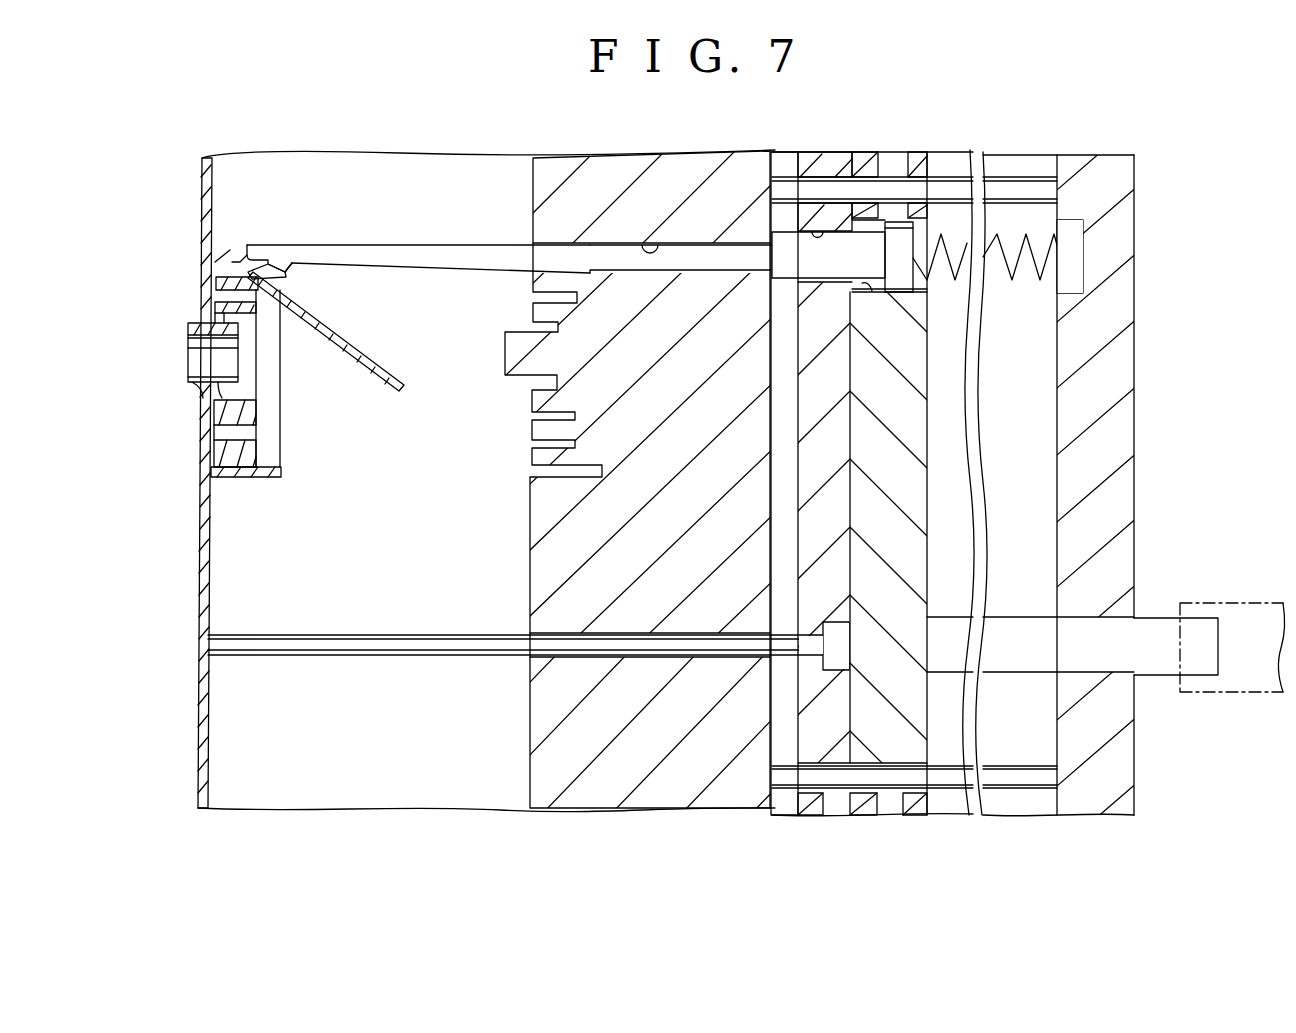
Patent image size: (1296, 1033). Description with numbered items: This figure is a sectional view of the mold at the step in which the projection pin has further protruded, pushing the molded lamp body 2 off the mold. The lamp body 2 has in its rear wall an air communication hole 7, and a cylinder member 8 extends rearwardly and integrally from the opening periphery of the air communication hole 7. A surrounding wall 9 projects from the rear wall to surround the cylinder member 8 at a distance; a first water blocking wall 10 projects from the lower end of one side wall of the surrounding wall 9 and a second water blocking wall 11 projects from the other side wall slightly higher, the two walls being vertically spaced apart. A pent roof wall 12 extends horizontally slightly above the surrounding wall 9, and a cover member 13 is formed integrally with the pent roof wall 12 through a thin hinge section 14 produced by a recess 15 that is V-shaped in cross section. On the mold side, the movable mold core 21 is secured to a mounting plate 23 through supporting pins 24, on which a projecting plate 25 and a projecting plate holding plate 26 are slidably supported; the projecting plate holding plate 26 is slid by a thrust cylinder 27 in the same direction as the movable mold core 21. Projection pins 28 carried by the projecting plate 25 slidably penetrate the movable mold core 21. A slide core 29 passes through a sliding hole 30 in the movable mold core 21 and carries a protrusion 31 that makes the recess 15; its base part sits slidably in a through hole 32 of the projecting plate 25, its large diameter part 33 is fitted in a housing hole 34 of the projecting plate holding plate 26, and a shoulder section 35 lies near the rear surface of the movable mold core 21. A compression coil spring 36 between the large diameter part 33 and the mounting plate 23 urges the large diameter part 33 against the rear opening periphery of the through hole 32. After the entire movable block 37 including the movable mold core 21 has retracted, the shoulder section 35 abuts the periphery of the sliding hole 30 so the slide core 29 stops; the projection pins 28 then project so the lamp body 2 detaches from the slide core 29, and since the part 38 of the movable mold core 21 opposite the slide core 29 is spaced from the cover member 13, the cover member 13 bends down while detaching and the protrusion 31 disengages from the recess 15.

The lamp body 2 is at (212, 604).
The air communication hole 7 is at (188, 350).
The cylinder member 8 is at (230, 390).
The surrounding wall 9 is at (212, 313).
The first water blocking wall 10 is at (213, 470).
The second water blocking wall 11 is at (218, 428).
The pent roof wall 12 is at (231, 250).
The cover member 13 is at (377, 353).
The thin hinge section 14 is at (267, 290).
The recess 15 is at (252, 250).
The movable mold core 21 is at (655, 790).
The mounting plate 23 is at (1123, 362).
The supporting pins 24 is at (1011, 190).
The projecting plate 25 is at (803, 733).
The projecting plate holding plate 26 is at (907, 485).
The thrust cylinder 27 is at (1235, 618).
The projection pins 28 is at (402, 640).
The slide core 29 is at (487, 258).
The sliding hole 30 is at (648, 245).
The protrusion 31 is at (282, 267).
The through hole 32 is at (818, 237).
The large diameter part 33 is at (899, 247).
The housing hole 34 is at (863, 283).
The shoulder section 35 is at (770, 236).
The compression coil spring 36 is at (1020, 240).
The movable block 37 is at (690, 803).
The part of the movable mold core 38 is at (625, 298).